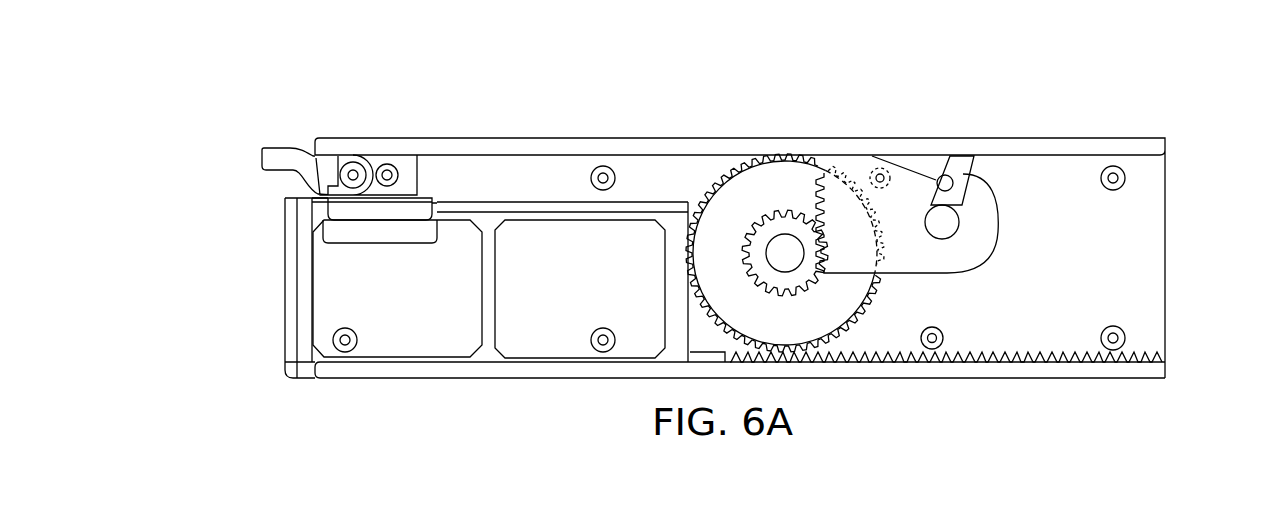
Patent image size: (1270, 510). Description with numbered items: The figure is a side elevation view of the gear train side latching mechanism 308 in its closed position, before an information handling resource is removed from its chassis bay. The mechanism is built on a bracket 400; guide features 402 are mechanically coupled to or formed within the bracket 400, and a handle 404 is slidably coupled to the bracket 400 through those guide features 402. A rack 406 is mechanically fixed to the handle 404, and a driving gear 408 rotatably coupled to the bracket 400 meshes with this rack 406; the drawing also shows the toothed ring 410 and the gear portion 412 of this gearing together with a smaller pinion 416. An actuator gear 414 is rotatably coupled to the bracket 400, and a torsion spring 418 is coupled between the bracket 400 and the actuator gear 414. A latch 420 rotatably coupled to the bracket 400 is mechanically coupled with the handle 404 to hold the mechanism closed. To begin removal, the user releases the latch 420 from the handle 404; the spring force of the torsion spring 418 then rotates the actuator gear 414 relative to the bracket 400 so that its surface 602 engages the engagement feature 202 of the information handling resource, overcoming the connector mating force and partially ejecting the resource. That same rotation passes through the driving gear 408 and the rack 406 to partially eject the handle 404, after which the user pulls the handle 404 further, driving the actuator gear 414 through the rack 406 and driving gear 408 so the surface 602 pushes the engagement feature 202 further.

The gear train side latching mechanism 308 is at (300, 67).
The bracket 400 is at (1165, 258).
The guide features 402 is at (418, 197).
The handle 404 is at (285, 280).
The rack 406 is at (1070, 353).
The driving gear 408 is at (703, 257).
The gear teeth 410 is at (706, 196).
The gear ring 412 is at (702, 194).
The actuator gear 414 is at (930, 275).
The pinion 416 is at (818, 207).
The torsion spring 418 is at (935, 182).
The latch 420 is at (262, 155).
The engagement feature 202 is at (951, 180).
The surface 602 is at (978, 230).